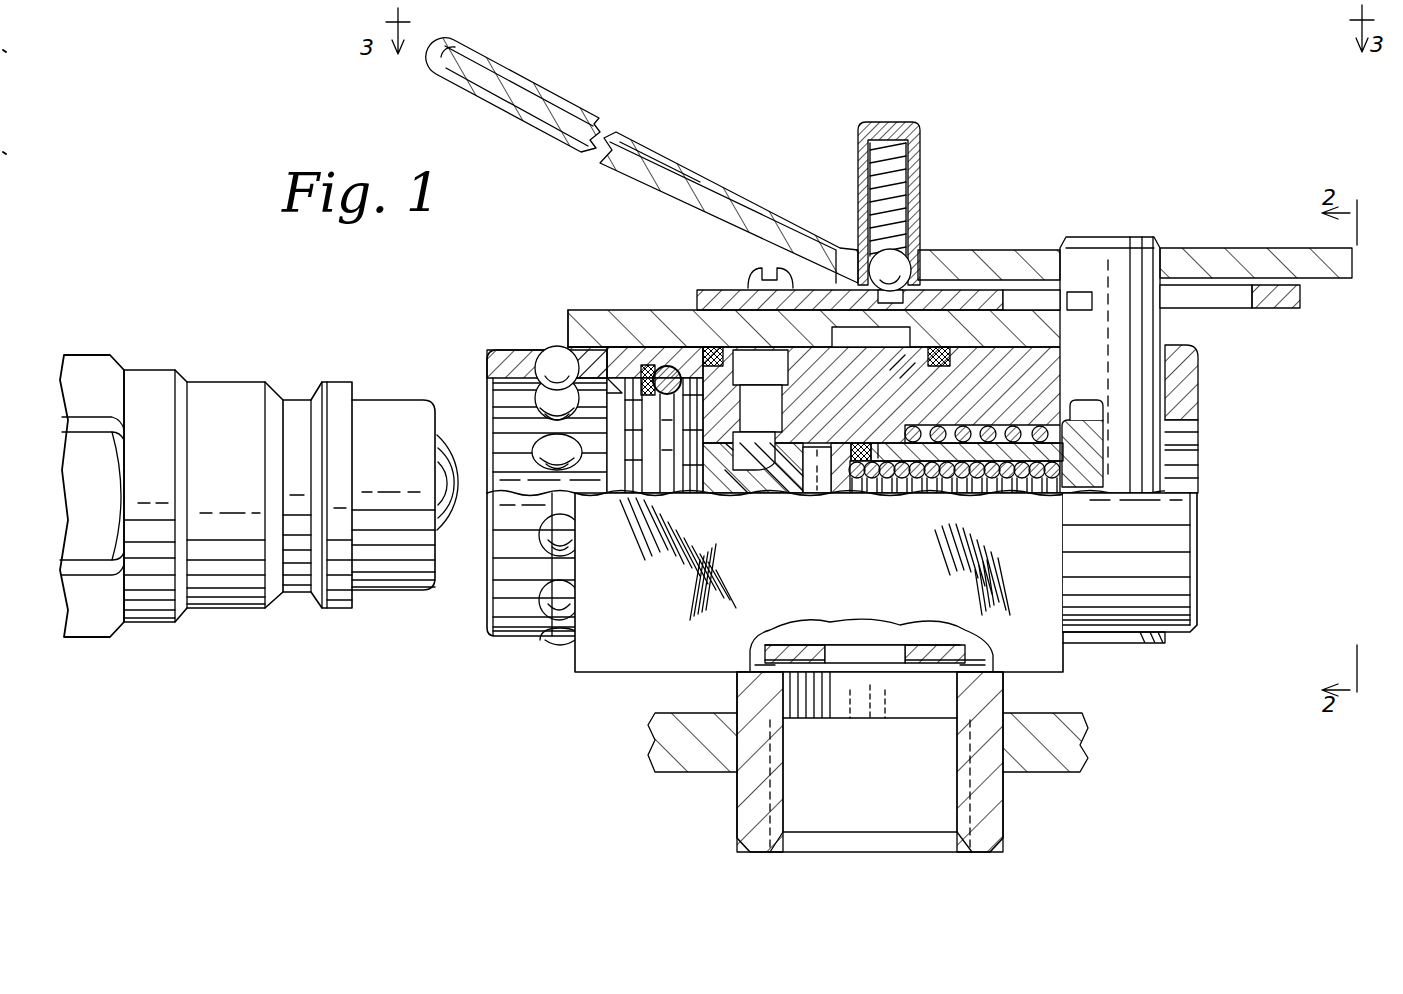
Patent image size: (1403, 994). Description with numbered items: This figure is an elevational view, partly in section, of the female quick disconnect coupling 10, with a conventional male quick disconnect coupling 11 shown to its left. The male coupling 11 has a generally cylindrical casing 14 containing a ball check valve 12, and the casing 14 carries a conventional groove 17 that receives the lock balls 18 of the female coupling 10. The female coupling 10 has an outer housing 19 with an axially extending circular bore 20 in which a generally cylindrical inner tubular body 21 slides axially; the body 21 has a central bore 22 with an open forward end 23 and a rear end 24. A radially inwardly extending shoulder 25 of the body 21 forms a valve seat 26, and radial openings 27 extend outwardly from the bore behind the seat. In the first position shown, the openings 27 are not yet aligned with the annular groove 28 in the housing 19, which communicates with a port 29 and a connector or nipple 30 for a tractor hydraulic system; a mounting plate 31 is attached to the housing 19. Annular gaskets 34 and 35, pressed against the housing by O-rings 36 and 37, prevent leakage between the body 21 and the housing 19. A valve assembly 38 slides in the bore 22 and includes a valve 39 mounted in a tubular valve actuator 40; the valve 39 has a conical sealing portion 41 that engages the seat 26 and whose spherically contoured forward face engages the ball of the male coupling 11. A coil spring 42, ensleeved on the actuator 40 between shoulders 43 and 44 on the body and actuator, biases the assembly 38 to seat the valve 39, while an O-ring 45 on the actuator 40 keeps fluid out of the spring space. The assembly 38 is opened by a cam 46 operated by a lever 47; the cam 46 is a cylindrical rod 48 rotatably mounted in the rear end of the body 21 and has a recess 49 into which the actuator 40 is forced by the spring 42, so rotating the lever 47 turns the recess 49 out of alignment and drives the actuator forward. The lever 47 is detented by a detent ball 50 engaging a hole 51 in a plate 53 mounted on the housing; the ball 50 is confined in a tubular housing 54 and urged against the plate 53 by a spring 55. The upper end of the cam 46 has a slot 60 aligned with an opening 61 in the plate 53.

The female quick disconnect coupling 10 is at (1190, 653).
The male quick disconnect coupling 11 is at (146, 338).
The ball check valve 12 is at (446, 440).
The casing 14 is at (232, 610).
The groove 17 is at (296, 400).
The lock balls 18 is at (540, 398).
The outer housing 19 is at (602, 655).
The circular bore 20 is at (568, 360).
The inner tubular housing or body 21 is at (490, 350).
The central bore 22 is at (644, 466).
The open forward end 23 is at (478, 400).
The rear end 24 is at (1182, 455).
The shoulder 25 is at (778, 380).
The valve seat 26 is at (700, 410).
The radial openings 27 is at (760, 367).
The annular groove 28 is at (862, 345).
The port 29 is at (842, 650).
The connector or nipple 30 is at (745, 796).
The mounting plate 31 is at (1085, 745).
The annular gasket 34 is at (706, 347).
The annular gasket 35 is at (922, 346).
The O-ring 36 is at (700, 355).
The O-ring 37 is at (950, 355).
The valve assembly 38 is at (882, 430).
The valve 39 is at (745, 492).
The tubular valve actuator 40 is at (945, 462).
The conical sealing portion 41 is at (718, 492).
The coil spring 42 is at (982, 426).
The shoulder 43 is at (888, 443).
The shoulder 44 is at (1062, 440).
The O-ring 45 is at (860, 435).
The cam 46 is at (1170, 365).
The lever 47 is at (742, 195).
The cylindrical rod 48 is at (1130, 338).
The recess 49 is at (1085, 402).
The detent ball 50 is at (895, 262).
The hole 51 is at (905, 300).
The plate 53 is at (1290, 307).
The tubular housing 54 is at (922, 150).
The spring 55 is at (882, 195).
The slot 60 is at (1100, 292).
The opening 61 is at (1222, 305).